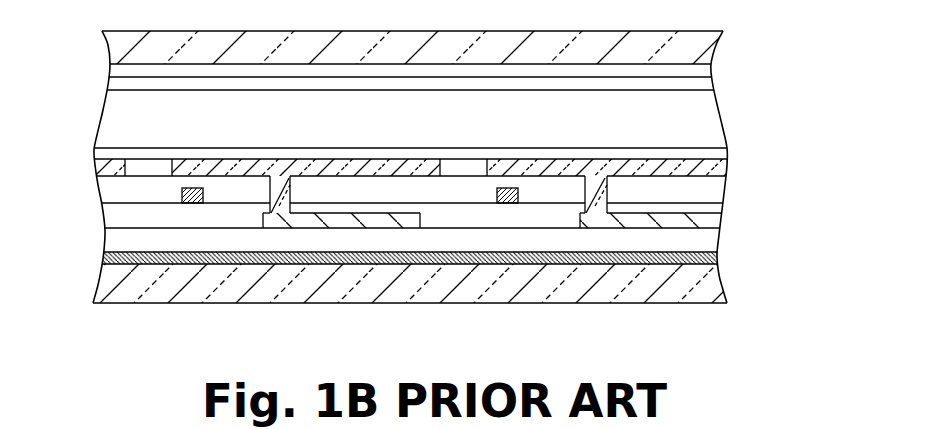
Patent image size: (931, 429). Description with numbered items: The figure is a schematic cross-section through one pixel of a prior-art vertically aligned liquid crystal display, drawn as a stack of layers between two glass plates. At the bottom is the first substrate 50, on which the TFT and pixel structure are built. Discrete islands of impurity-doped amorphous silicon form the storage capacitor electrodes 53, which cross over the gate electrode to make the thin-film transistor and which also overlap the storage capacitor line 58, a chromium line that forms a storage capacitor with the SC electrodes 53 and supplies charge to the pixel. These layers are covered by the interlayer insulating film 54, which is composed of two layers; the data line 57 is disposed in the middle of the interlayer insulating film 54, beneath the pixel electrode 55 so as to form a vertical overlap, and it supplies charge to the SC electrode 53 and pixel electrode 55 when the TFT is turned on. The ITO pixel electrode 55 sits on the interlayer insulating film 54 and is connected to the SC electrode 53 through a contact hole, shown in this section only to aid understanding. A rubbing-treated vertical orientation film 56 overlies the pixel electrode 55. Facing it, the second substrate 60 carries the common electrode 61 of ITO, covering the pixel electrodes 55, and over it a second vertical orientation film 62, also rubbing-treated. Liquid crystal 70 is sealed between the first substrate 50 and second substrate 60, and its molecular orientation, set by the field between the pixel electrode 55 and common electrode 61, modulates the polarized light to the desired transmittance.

The first substrate 50 is at (720, 290).
The storage capacitor electrode 53 is at (717, 220).
The interlayer insulating film 54 is at (713, 195).
The pixel electrode 55 is at (715, 172).
The vertical orientation film 56 is at (720, 155).
The data line 57 is at (503, 204).
The storage capacitor line 58 is at (720, 267).
The second substrate 60 is at (720, 48).
The common electrode 61 is at (702, 70).
The vertical orientation film 62 is at (705, 85).
The liquid crystal 70 is at (705, 128).